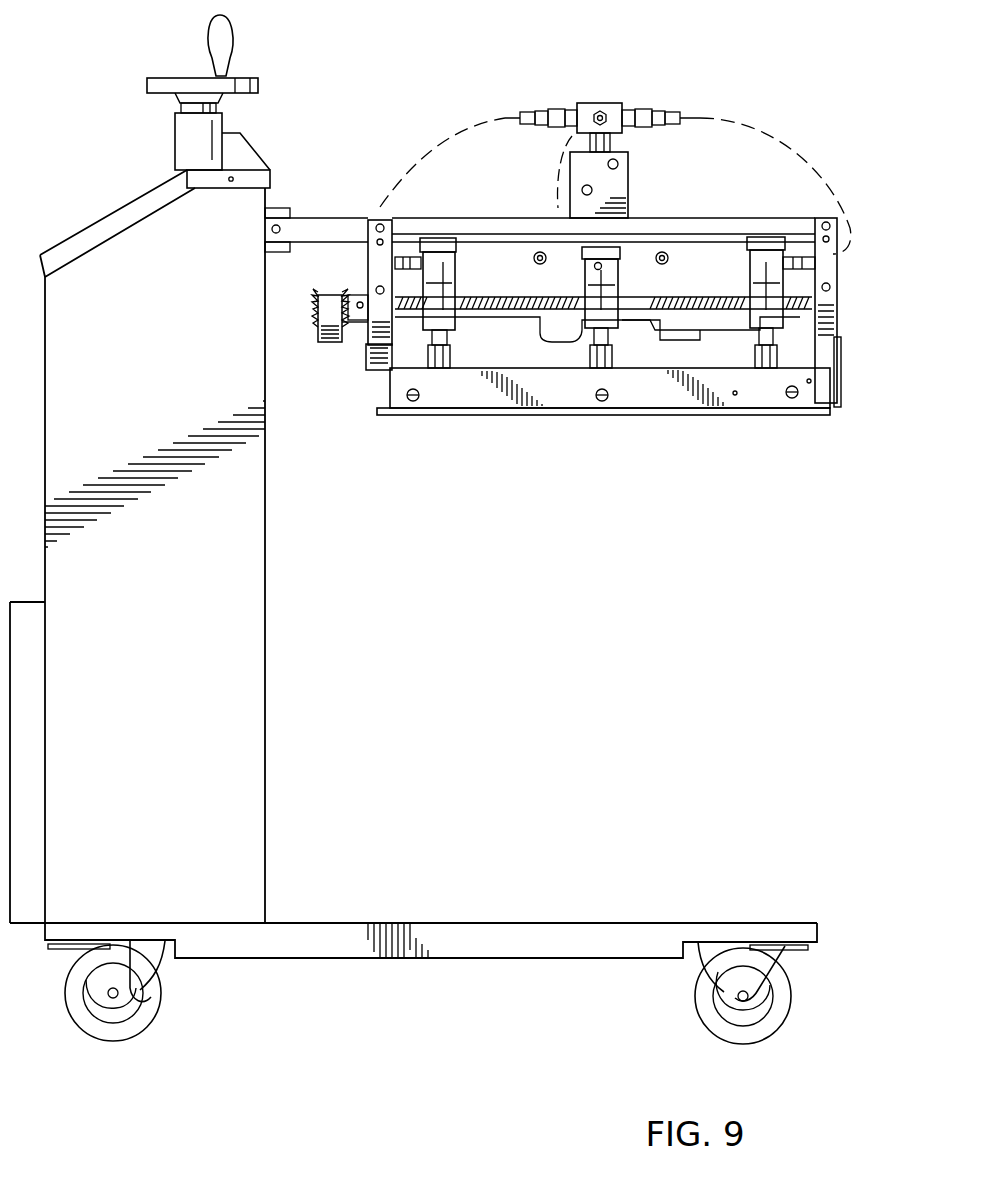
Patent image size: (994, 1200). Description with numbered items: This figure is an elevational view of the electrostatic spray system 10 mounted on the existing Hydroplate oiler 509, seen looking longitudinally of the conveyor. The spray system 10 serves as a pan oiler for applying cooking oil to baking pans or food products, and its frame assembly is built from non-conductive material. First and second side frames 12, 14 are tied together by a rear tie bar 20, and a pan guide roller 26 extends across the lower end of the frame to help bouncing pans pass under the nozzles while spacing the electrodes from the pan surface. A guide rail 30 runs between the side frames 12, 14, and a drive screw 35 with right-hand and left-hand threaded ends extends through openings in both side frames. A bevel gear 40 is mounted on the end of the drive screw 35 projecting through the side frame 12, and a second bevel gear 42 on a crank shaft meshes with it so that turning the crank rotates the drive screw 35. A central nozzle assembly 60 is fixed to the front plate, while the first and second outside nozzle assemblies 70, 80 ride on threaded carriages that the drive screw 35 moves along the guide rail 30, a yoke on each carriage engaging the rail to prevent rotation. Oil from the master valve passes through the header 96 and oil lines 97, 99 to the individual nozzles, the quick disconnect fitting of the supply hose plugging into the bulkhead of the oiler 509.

The oiler 509 is at (100, 209).
The electrostatic spray system 10 is at (680, 203).
The first side frame 12 is at (370, 386).
The second side frame 14 is at (842, 312).
The rear tie bar 20 is at (478, 400).
The pan guide roller 26 is at (627, 416).
The guide rail 30 is at (528, 232).
The drive screw 35 is at (572, 297).
The bevel gear 40 is at (365, 322).
The second bevel gear 42 is at (320, 292).
The central nozzle assembly 60 is at (617, 294).
The first outside nozzle assembly 70 is at (457, 321).
The second outside nozzle assembly 80 is at (749, 327).
The header 96 is at (592, 118).
The oil line 97 is at (406, 258).
The oil line 99 is at (838, 262).